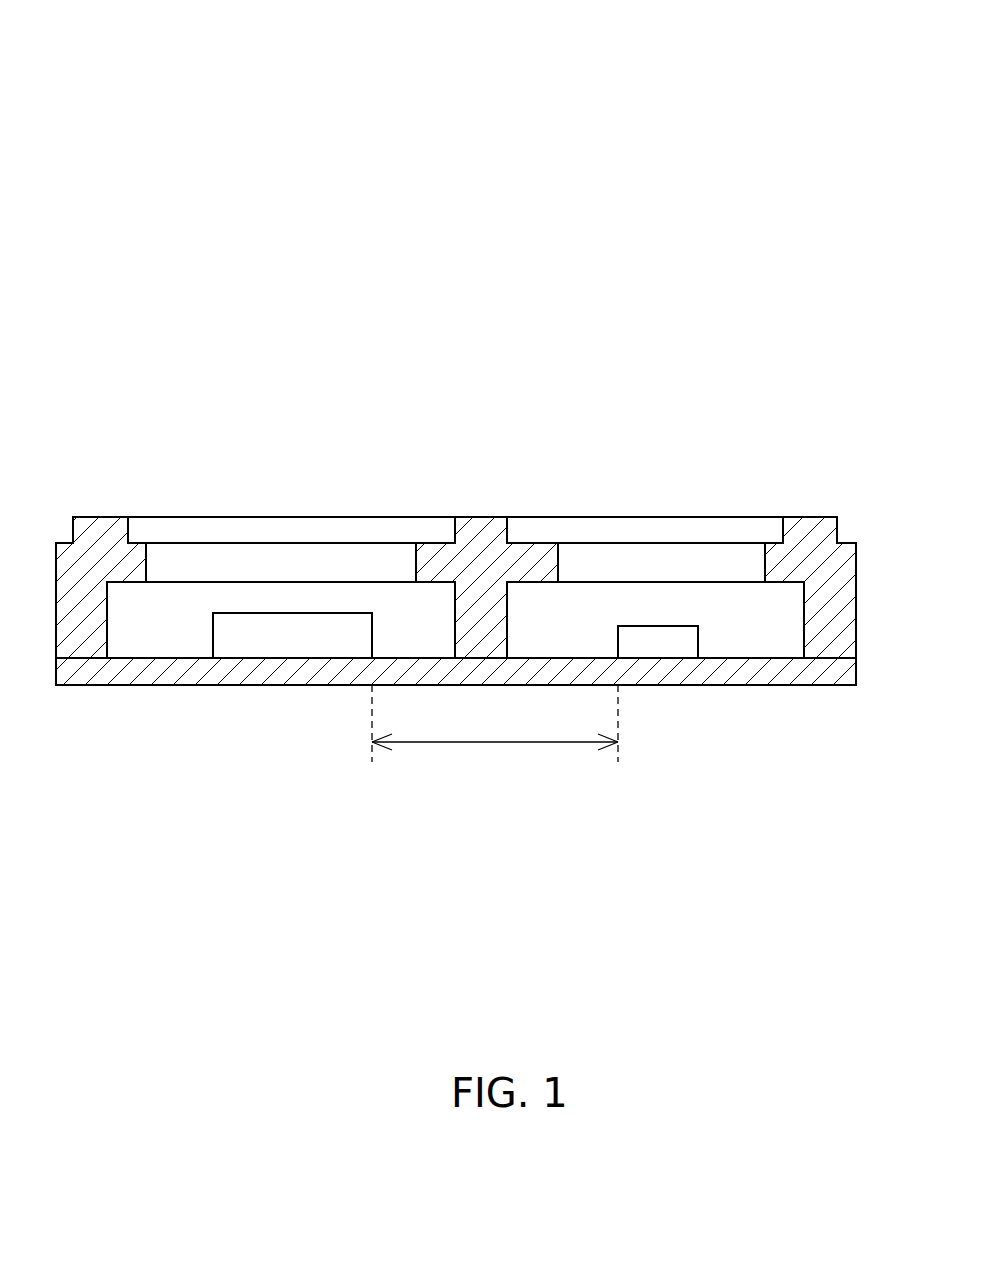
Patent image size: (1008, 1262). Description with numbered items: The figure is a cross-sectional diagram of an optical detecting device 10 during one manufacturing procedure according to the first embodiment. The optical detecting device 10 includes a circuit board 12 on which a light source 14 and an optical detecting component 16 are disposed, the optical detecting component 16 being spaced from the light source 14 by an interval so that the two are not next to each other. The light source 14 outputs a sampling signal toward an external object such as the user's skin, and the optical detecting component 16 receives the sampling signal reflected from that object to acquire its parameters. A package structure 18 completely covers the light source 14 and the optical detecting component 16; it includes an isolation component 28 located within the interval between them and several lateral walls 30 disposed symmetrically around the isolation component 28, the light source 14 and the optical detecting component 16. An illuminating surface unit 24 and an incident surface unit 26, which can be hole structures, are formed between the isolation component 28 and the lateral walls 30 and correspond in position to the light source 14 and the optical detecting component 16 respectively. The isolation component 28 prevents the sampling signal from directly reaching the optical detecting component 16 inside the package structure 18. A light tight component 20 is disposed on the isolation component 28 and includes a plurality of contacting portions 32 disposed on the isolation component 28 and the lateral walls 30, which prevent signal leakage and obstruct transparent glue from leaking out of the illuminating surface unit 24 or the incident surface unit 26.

The optical detecting device 10 is at (752, 90).
The circuit board 12 is at (729, 670).
The light source 14 is at (664, 636).
The optical detecting component 16 is at (290, 633).
The package structure 18 is at (462, 520).
The light tight component 20 is at (823, 345).
The illuminating surface unit 24 is at (670, 568).
The incident surface unit 26 is at (290, 568).
The isolation component 28 is at (482, 628).
The lateral wall 30 is at (80, 640).
The contacting portion 32 is at (105, 527).